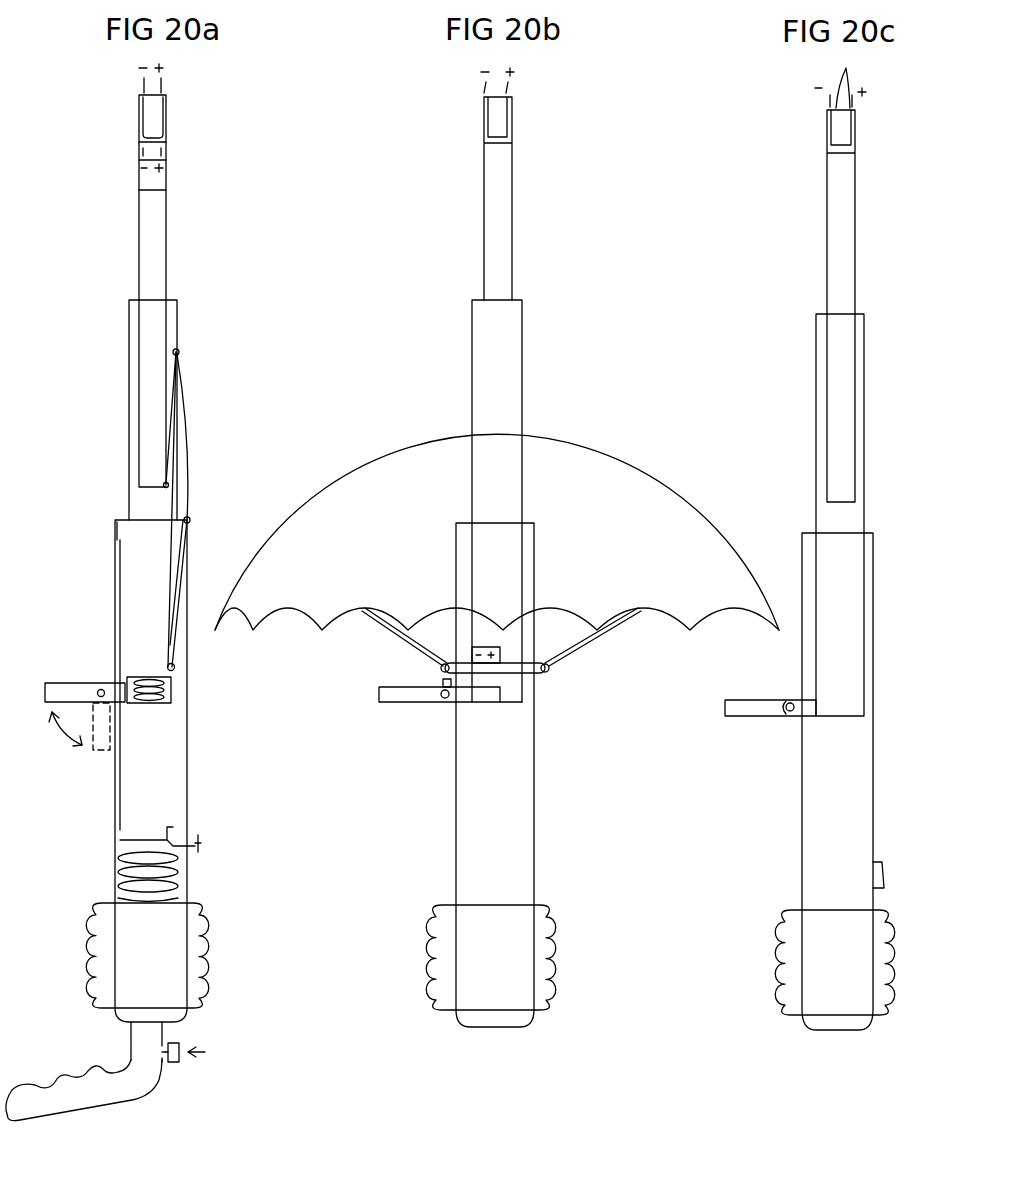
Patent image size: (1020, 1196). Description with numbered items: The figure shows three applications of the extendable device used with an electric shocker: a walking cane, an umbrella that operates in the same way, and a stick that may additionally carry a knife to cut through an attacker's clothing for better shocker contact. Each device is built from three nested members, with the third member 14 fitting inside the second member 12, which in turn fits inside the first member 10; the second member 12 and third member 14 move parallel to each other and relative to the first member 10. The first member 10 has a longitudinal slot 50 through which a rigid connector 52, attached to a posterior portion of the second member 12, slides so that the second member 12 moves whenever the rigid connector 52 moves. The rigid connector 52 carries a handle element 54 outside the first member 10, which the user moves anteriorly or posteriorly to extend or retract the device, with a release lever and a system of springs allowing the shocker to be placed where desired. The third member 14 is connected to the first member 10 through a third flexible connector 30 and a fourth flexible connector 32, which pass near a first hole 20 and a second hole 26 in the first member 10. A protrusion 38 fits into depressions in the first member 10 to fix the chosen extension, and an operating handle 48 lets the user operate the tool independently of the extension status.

In FIG. 20A, the first member 10 is at (172, 778).
In FIG. 20B, the first member 10 is at (495, 775).
In FIG. 20C, the first member 10 is at (843, 781).
In FIG. 20A, the second member 12 is at (143, 507).
In FIG. 20B, the second member 12 is at (497, 501).
In FIG. 20C, the second member 12 is at (840, 515).
In FIG. 20A, the third member 14 is at (172, 252).
In FIG. 20B, the third member 14 is at (498, 198).
In FIG. 20C, the third member 14 is at (841, 306).
In FIG. 20A, the first hole 20 is at (179, 352).
In FIG. 20A, the second hole 26 is at (174, 672).
In FIG. 20B, the second hole 26 is at (495, 660).
In FIG. 20A, the third flexible connector 30 is at (188, 472).
In FIG. 20B, the third flexible connector 30 is at (497, 550).
In FIG. 20A, the fourth flexible connector 32 is at (185, 505).
In FIG. 20A, the protrusion 38 is at (220, 847).
In FIG. 20A, the operating handle 48 is at (197, 958).
In FIG. 20B, the operating handle 48 is at (491, 957).
In FIG. 20C, the operating handle 48 is at (835, 962).
In FIG. 20A, the longitudinal slot 50 is at (113, 778).
In FIG. 20A, the rigid connector 52 is at (128, 688).
In FIG. 20A, the handle element 54 is at (62, 692).
In FIG. 20B, the handle element 54 is at (450, 690).
In FIG. 20C, the handle element 54 is at (770, 708).